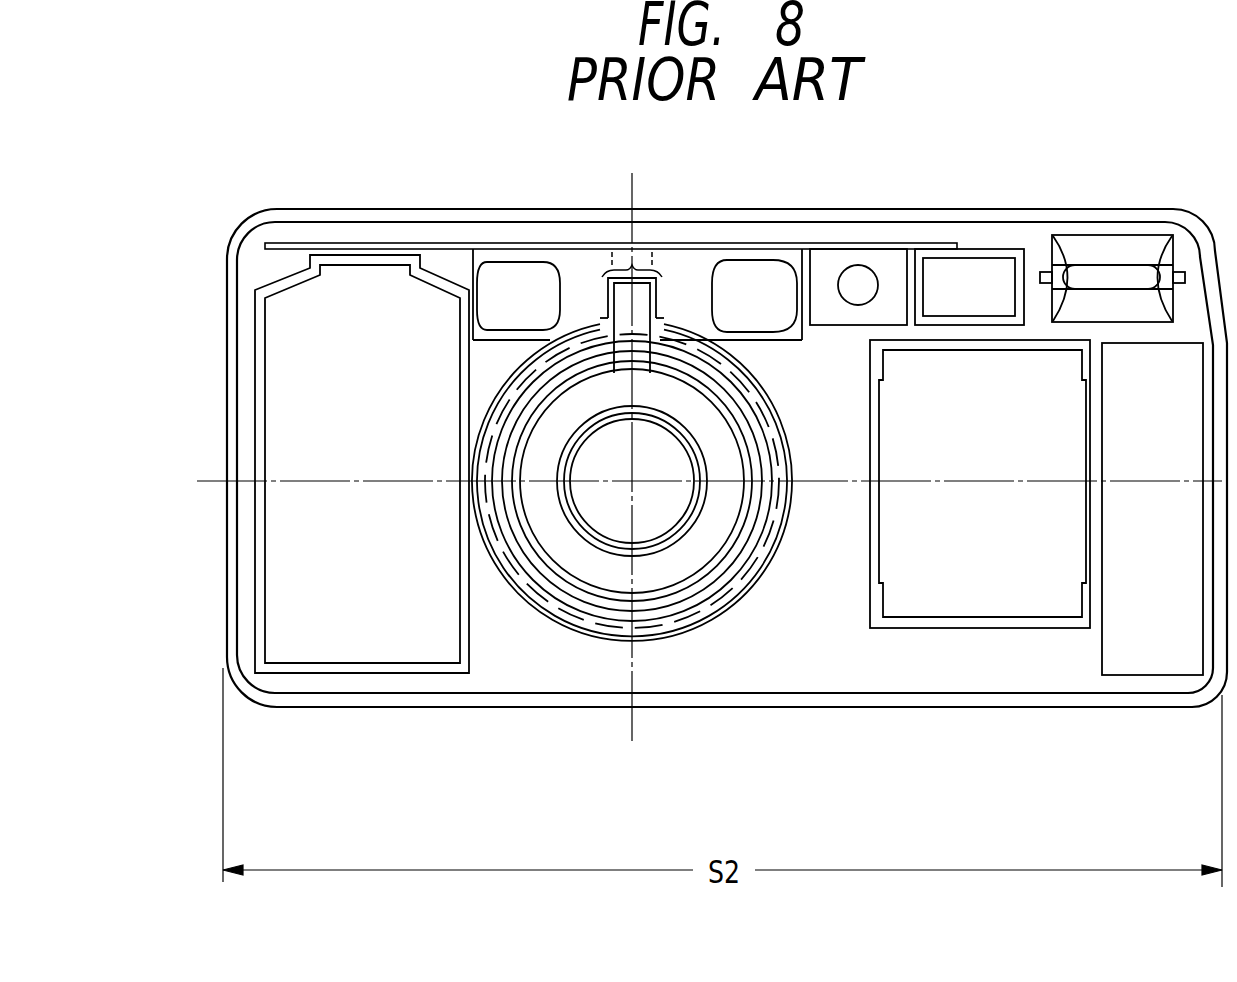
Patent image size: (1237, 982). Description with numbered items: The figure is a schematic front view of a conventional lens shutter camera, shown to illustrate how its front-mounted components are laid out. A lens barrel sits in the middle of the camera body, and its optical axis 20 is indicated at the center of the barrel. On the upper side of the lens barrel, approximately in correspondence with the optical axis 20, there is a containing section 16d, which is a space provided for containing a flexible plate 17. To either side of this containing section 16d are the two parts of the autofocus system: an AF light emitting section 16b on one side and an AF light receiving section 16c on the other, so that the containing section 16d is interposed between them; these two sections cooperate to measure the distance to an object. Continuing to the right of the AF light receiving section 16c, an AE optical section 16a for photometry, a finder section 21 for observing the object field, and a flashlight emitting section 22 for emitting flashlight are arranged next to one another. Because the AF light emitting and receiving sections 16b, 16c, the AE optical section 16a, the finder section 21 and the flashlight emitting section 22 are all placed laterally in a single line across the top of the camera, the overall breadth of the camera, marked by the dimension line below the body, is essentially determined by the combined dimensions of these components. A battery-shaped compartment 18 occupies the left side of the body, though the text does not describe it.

The battery 18 is at (362, 242).
The AE optical section 16a is at (860, 275).
The AF light emitting section 16b is at (515, 277).
The AF light receiving section 16c is at (752, 275).
The containing section 16d is at (622, 260).
The flexible plate 17 is at (642, 302).
The optical axis 20 is at (640, 495).
The finder section 21 is at (977, 267).
The flashlight emitting section 22 is at (1118, 272).